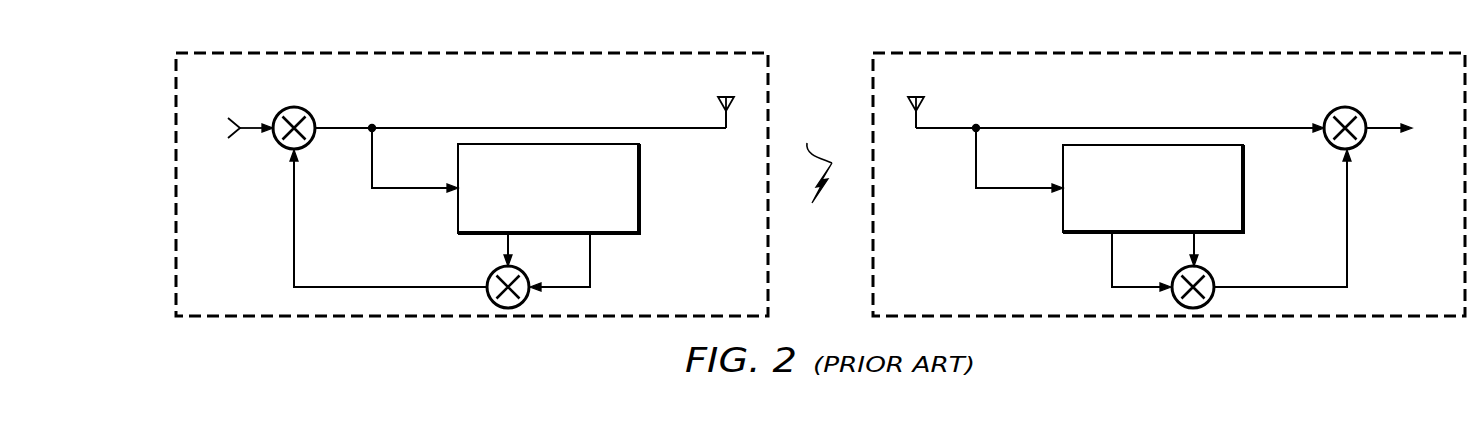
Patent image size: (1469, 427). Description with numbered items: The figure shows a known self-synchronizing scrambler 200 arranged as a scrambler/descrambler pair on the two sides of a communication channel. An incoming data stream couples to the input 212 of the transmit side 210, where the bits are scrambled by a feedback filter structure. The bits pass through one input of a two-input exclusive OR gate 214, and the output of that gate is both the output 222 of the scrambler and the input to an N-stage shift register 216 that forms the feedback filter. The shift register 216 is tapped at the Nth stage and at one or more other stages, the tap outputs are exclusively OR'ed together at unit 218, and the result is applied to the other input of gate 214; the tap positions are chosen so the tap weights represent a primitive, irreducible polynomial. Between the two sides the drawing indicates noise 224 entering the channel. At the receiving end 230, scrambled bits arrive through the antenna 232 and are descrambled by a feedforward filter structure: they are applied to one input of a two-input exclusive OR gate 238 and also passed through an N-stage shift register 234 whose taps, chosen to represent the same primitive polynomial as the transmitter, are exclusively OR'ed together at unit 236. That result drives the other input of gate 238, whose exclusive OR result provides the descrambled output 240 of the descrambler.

The self-synchronizing scrambler 200 is at (214, 24).
The transmit side 210 is at (258, 93).
The input 212 is at (234, 142).
The exclusive OR gate 214 is at (310, 112).
The N-stage shift register 216 is at (641, 188).
The unit 218 is at (487, 276).
The output 222 is at (716, 101).
The noise 224 is at (819, 178).
The receiving end 230 is at (1421, 94).
The receive antenna 232 is at (924, 101).
The N-stage shift register 234 is at (1245, 186).
The unit 236 is at (1214, 277).
The exclusive OR gate 238 is at (1330, 112).
The output signal 240 is at (1384, 132).